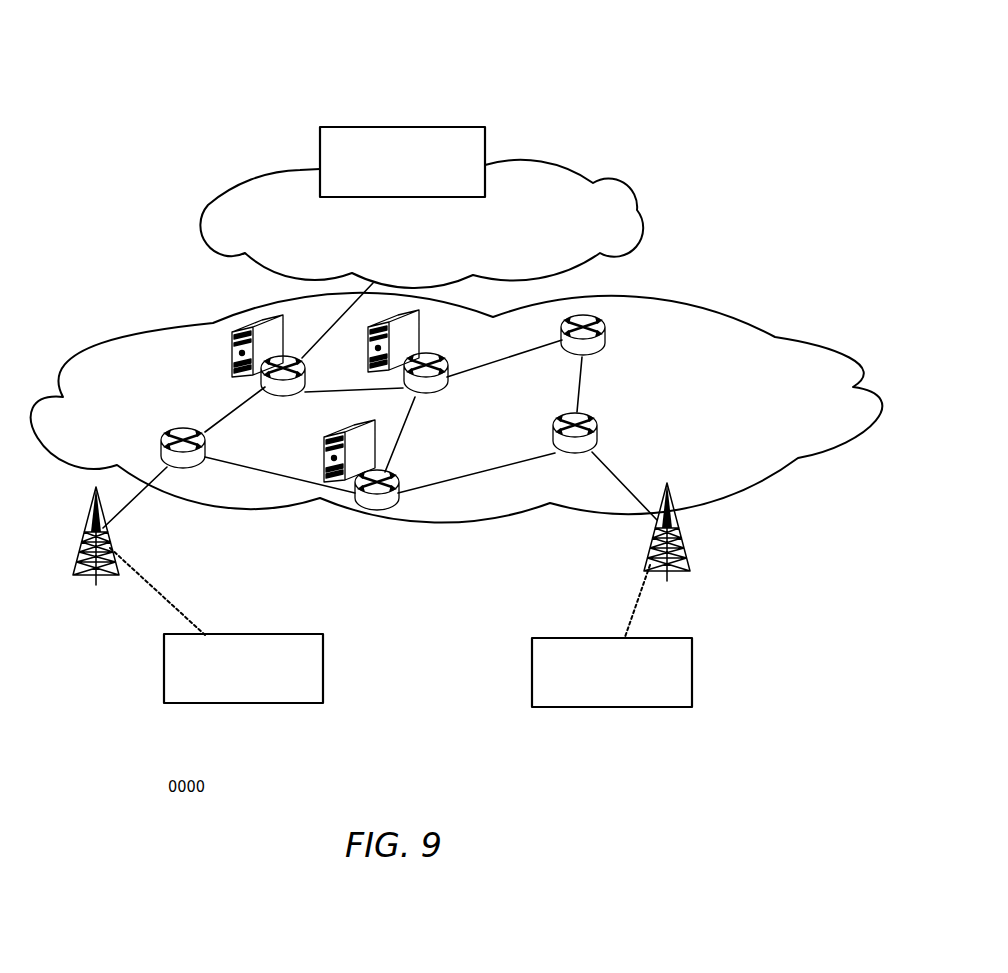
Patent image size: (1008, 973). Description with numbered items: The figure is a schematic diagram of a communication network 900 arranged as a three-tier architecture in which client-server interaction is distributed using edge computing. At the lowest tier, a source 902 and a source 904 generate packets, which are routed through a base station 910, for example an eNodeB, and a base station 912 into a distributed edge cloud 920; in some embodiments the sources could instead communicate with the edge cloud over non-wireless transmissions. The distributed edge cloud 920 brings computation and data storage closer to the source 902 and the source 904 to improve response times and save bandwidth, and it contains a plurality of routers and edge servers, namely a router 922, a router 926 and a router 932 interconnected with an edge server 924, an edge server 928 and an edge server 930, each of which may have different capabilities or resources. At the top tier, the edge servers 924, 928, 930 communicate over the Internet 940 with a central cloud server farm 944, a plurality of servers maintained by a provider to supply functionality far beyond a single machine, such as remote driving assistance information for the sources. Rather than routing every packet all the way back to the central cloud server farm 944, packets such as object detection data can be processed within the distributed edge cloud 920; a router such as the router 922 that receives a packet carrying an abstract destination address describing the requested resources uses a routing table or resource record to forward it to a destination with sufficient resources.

The communication network 900 is at (177, 56).
The source 902 is at (323, 645).
The source 904 is at (692, 649).
The base station 910 is at (86, 540).
The base station 912 is at (650, 553).
The distributed edge cloud 920 is at (802, 335).
The router 922 is at (170, 432).
The edge server 924 is at (399, 484).
The router 926 is at (597, 444).
The edge server 928 is at (285, 396).
The edge server 930 is at (447, 368).
The router 932 is at (605, 330).
The Internet 940 is at (635, 187).
The central cloud server farm 944 is at (485, 131).